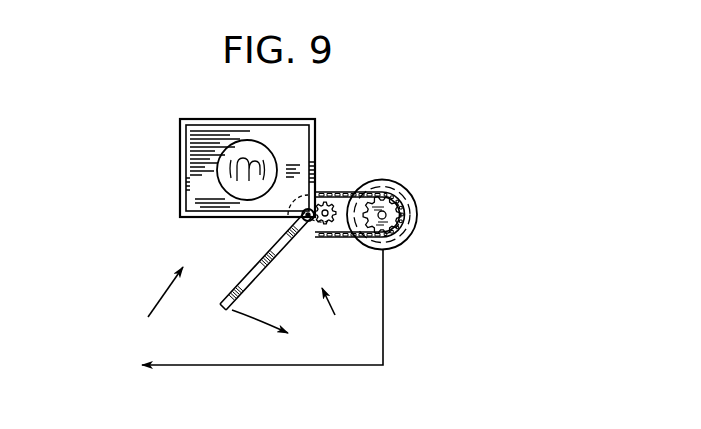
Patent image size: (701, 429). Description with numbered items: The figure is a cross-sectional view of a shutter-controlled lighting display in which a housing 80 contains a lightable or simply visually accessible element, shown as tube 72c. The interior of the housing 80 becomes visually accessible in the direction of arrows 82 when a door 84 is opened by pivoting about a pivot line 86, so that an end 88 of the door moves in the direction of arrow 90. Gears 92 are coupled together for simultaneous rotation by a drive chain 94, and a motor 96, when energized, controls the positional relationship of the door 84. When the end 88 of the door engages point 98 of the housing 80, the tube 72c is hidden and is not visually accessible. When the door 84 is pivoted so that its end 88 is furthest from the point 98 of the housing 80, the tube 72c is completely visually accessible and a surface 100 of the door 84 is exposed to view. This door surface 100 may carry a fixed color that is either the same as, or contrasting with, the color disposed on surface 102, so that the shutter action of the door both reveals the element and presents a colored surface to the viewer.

The lightable or visually accessible element 72c is at (270, 165).
The housing 80 is at (283, 120).
The arrows 82 is at (162, 288).
The door 84 is at (243, 292).
The pivot line 86 is at (324, 224).
The end of door 88 is at (215, 312).
The arrow 90 is at (265, 335).
The gears 92 is at (325, 203).
The drive chain 94 is at (350, 188).
The motor 96 is at (417, 220).
The point of housing 98 is at (180, 220).
The surface of door 100 is at (248, 263).
The surface 102 is at (268, 267).